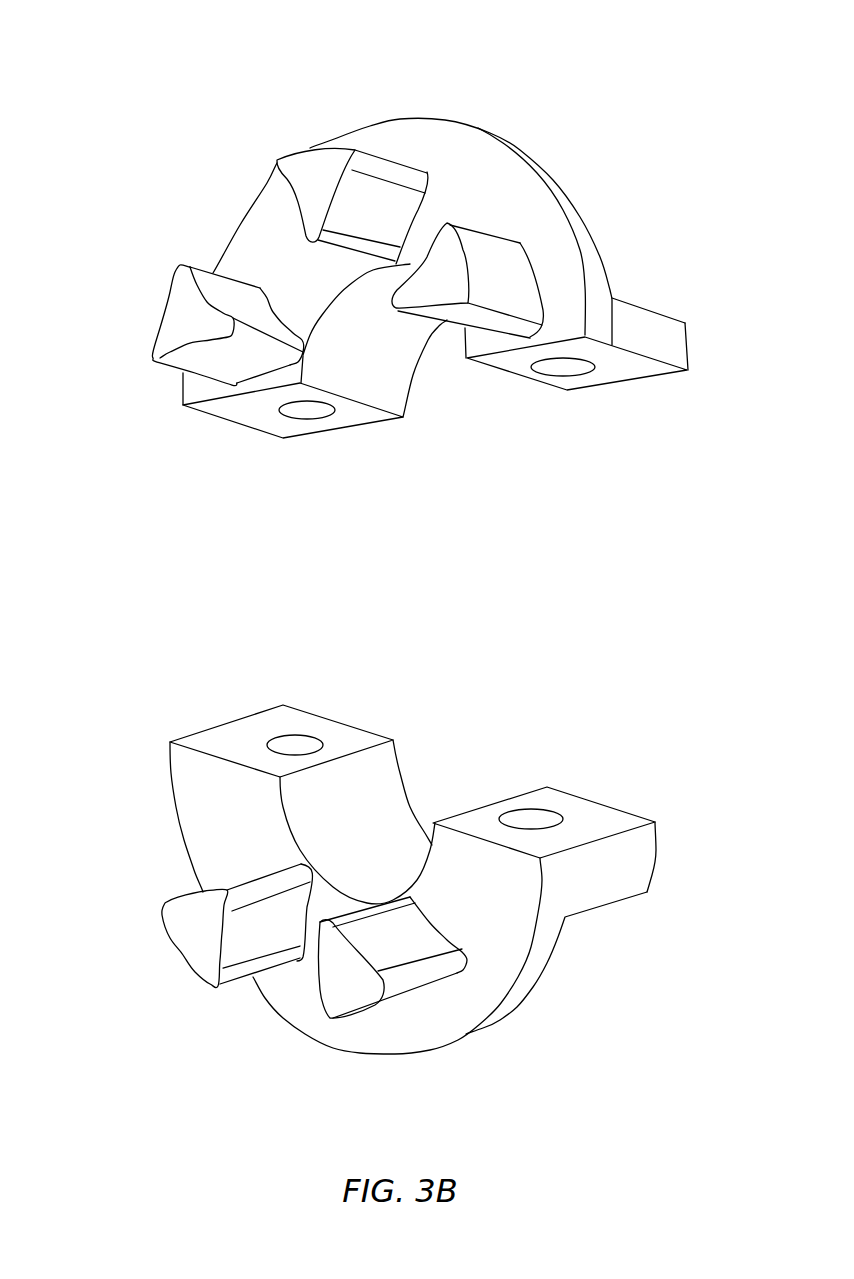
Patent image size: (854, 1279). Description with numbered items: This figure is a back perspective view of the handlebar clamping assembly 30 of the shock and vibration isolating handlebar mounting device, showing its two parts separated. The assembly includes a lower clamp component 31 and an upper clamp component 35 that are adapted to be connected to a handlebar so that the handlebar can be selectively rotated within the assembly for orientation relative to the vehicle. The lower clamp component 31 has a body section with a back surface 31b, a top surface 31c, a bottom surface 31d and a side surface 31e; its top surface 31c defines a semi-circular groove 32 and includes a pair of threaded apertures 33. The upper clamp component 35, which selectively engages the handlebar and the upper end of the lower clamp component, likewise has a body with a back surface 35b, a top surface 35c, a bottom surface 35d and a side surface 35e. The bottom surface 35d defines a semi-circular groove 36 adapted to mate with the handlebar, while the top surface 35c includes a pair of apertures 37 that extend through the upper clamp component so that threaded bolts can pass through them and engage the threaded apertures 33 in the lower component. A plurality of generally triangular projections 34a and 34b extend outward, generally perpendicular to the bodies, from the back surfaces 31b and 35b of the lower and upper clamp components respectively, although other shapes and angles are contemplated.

The handlebar clamping assembly 30 is at (168, 104).
The lower clamp component 31 is at (122, 870).
The back surface 31b is at (297, 990).
The top surface 31c is at (242, 733).
The bottom surface 31d is at (377, 1053).
The side surface 31e is at (593, 873).
The semi-circular groove 32 is at (390, 816).
The threaded apertures 33 is at (302, 744).
The projections 34a is at (201, 943).
The projections 34b is at (192, 322).
The upper clamp component 35 is at (155, 238).
The back surface 35b is at (450, 143).
The top surface 35c is at (640, 298).
The bottom surface 35d is at (613, 370).
The side surface 35e is at (660, 342).
The semi-circular groove 36 is at (448, 385).
The apertures 37 is at (310, 410).